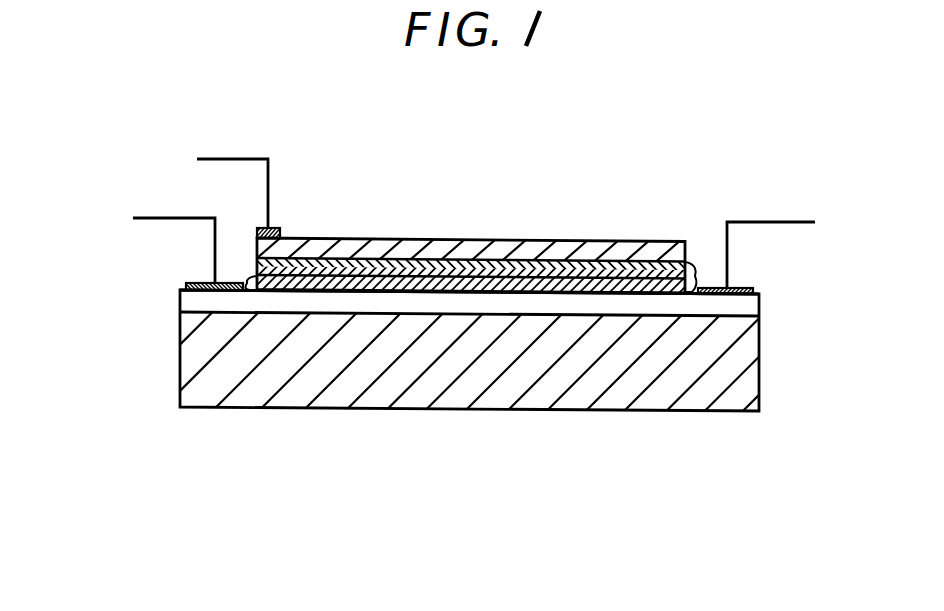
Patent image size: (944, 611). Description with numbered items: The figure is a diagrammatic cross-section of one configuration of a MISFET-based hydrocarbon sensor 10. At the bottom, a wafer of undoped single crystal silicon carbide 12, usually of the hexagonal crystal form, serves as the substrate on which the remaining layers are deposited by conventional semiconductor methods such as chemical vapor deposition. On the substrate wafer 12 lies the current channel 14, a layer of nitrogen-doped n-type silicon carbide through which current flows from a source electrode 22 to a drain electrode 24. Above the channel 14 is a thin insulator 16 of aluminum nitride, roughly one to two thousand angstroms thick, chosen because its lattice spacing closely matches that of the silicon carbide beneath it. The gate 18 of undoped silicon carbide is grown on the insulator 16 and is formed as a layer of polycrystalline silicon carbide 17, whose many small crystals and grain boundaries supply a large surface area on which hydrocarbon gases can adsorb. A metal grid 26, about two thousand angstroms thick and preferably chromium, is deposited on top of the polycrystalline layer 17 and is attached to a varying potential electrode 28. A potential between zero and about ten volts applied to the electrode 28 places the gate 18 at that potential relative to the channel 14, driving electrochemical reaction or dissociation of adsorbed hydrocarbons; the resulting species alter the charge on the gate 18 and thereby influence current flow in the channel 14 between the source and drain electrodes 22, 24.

The sensor 10 is at (158, 343).
The silicon carbide substrate wafer 12 is at (738, 360).
The current channel 14 is at (760, 300).
The insulator layer 16 is at (253, 280).
The polycrystalline silicon carbide layer 17 is at (697, 283).
The gate 18 is at (705, 283).
The source electrode 22 is at (217, 231).
The drain electrode 24 is at (728, 221).
The metal grid 26 is at (452, 240).
The varying potential electrode 28 is at (269, 199).